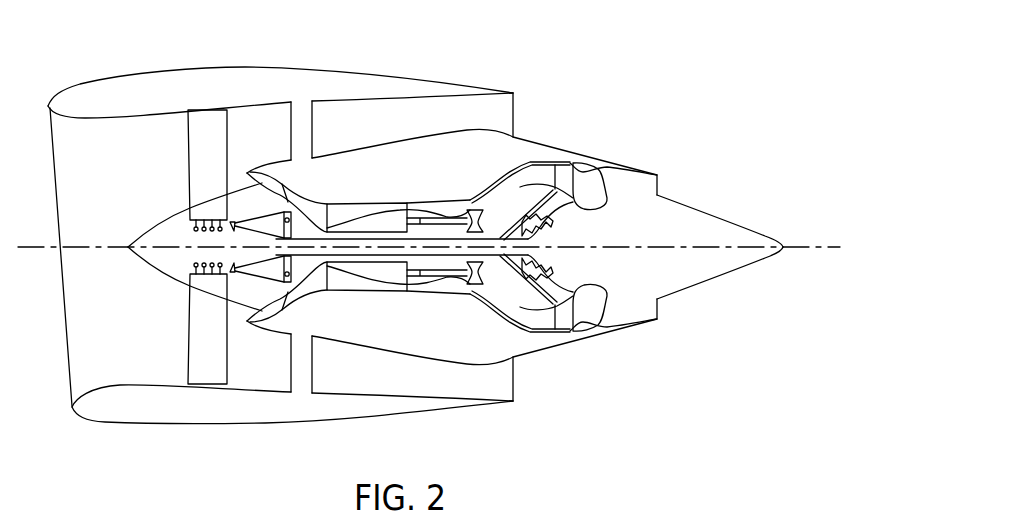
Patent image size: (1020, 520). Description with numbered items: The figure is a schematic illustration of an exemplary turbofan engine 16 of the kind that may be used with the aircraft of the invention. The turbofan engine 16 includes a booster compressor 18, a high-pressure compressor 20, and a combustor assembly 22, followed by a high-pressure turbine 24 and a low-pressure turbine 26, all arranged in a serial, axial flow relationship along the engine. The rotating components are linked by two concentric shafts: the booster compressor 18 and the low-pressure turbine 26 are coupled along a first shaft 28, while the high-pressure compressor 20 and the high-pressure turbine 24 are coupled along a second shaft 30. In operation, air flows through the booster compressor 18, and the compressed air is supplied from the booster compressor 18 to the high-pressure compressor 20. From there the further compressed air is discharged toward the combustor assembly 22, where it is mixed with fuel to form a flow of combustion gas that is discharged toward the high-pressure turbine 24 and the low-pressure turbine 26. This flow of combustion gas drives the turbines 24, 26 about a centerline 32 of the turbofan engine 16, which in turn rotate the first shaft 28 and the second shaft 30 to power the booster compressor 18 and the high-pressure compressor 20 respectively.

The turbofan engine 16 is at (616, 50).
The booster compressor 18 is at (254, 177).
The high-pressure compressor 20 is at (343, 206).
The combustor assembly 22 is at (443, 201).
The high-pressure turbine 24 is at (469, 298).
The low-pressure turbine 26 is at (537, 173).
The first shaft 28 is at (313, 272).
The second shaft 30 is at (420, 230).
The centerline 32 is at (811, 246).